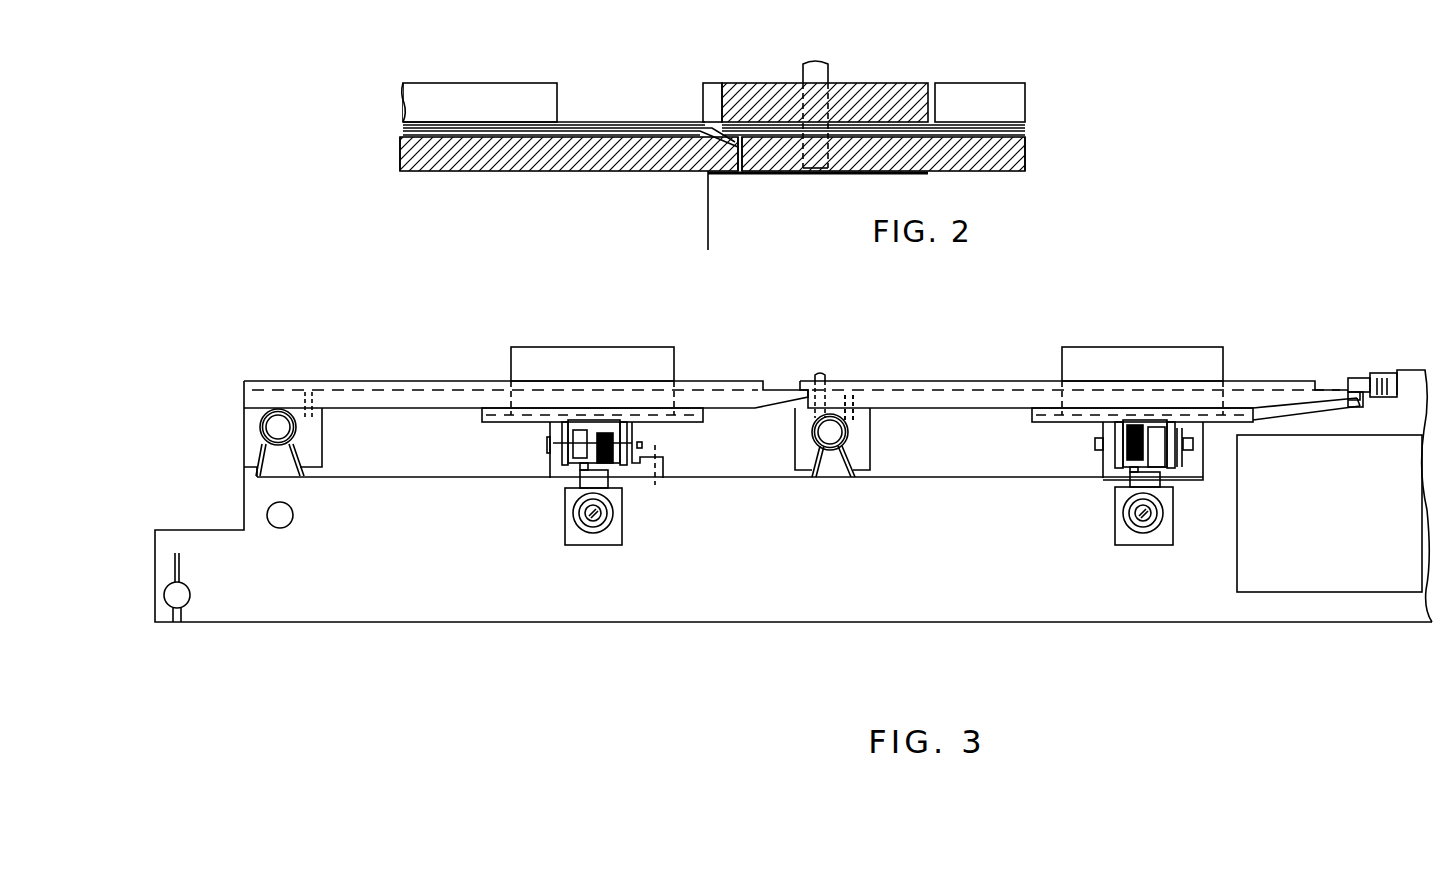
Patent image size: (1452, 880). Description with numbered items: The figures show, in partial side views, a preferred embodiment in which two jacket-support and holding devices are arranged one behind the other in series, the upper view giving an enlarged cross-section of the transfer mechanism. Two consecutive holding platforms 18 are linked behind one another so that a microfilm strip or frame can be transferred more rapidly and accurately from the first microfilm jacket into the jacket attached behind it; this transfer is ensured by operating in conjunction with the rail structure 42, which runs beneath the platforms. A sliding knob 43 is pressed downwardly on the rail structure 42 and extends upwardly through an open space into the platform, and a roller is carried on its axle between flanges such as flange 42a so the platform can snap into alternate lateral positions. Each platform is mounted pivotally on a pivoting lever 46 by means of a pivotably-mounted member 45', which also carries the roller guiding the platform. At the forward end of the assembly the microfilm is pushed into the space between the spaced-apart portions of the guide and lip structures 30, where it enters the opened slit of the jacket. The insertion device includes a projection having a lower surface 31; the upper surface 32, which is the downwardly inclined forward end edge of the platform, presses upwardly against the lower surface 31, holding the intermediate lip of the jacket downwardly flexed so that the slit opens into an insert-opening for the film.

In FIG. 2, the support and holding device 18 is at (480, 60).
In FIG. 3, the support and holding device 18 is at (396, 364).
In FIG. 2, the rail structure 42 is at (822, 73).
In FIG. 3, the rail structure 42 is at (820, 373).
In FIG. 2, the flange 42a is at (738, 83).
In FIG. 3, the flange 42a is at (831, 381).
In FIG. 3, the sliding knob 43 is at (663, 363).
In FIG. 3, the bracket 45' is at (586, 429).
In FIG. 3, the pivoting lever 46 is at (275, 432).
In FIG. 3, the guide and lip structures 30 is at (1390, 382).
In FIG. 3, the lower surface 31 is at (1358, 378).
In FIG. 3, the upper surface 32 is at (1357, 390).